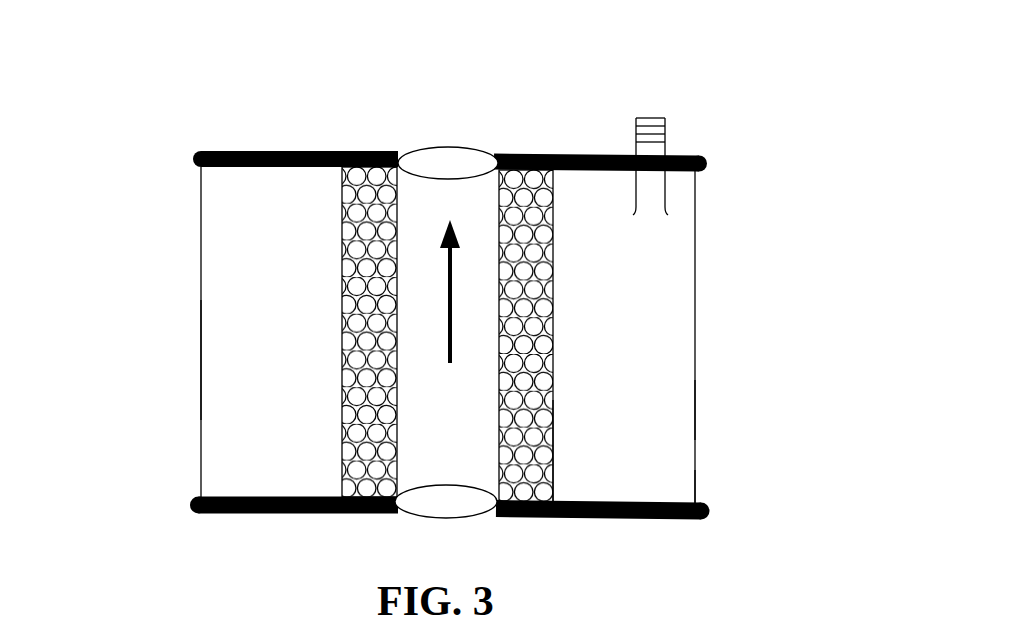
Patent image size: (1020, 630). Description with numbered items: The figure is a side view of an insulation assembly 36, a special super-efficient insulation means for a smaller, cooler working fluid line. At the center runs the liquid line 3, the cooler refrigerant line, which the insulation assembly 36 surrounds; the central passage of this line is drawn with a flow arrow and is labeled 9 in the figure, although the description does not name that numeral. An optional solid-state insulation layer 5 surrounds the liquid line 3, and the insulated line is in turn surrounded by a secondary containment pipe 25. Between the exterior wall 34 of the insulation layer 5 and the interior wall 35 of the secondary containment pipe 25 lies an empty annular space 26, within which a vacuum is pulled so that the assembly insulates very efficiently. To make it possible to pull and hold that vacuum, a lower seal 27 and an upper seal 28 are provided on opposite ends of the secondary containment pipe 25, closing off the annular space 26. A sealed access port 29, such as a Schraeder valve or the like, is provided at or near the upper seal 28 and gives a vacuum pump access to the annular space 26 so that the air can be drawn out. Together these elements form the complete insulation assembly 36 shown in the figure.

The insulation assembly 36 is at (190, 113).
The upper seal 28 is at (315, 152).
The central flow channel 9 is at (455, 230).
The sealed access port 29 is at (664, 140).
The liquid line 3 is at (396, 221).
The insulation layer 5 is at (367, 247).
The secondary containment pipe 25 is at (200, 313).
The empty annular space 26 is at (240, 394).
The lower seal 27 is at (192, 510).
The exterior wall of the insulation layer 34 is at (555, 445).
The interior wall of the secondary containment pipe 35 is at (700, 490).